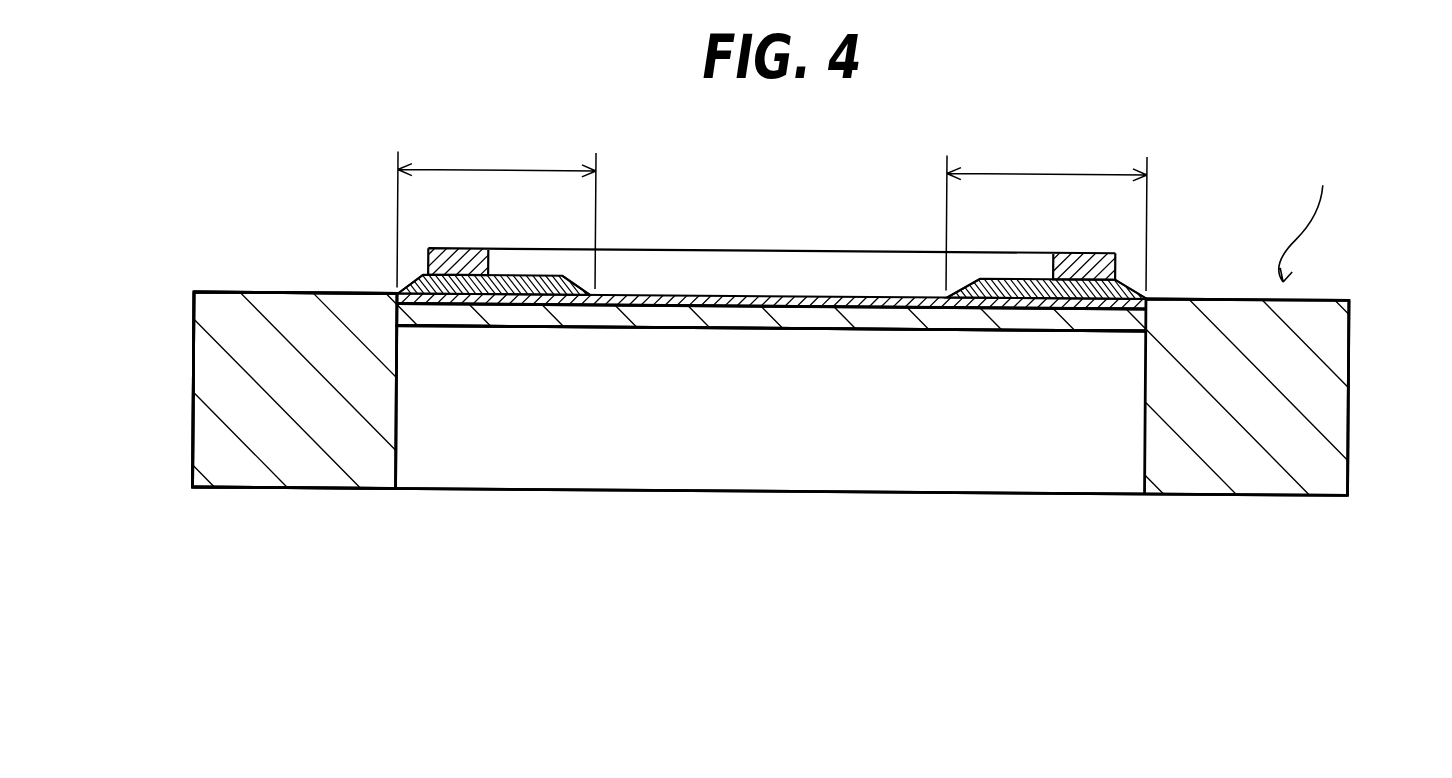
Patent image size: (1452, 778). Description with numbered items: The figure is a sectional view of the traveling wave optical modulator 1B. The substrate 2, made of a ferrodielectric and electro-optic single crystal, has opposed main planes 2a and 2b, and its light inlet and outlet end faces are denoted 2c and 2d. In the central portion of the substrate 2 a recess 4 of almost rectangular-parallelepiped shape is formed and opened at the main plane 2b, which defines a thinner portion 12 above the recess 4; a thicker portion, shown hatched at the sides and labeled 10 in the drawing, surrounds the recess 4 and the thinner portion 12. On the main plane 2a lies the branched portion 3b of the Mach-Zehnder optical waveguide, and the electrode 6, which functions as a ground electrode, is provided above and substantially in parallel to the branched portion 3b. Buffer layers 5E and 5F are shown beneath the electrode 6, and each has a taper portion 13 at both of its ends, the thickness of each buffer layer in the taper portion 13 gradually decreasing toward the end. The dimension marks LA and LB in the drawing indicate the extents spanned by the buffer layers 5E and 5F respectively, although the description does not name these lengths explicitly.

The traveling wave optical modulator 1B is at (1300, 165).
The substrate 2 is at (313, 327).
The main plane 2a is at (253, 292).
The main plane 2b is at (300, 488).
The light inlet end face 2c is at (192, 413).
The light outlet end face 2d is at (1349, 356).
The branched portion 3b is at (698, 296).
The recess 4 is at (815, 323).
The buffer layer 5E is at (542, 278).
The buffer layer 5F is at (1030, 287).
The electrode 6 is at (473, 258).
The support portion of substrate 10 is at (213, 355).
The thinner portion 12 is at (785, 317).
The taper portion 13 is at (400, 290).
The length of electrode 5E LA is at (496, 209).
The length of electrode 5F LB is at (1046, 213).